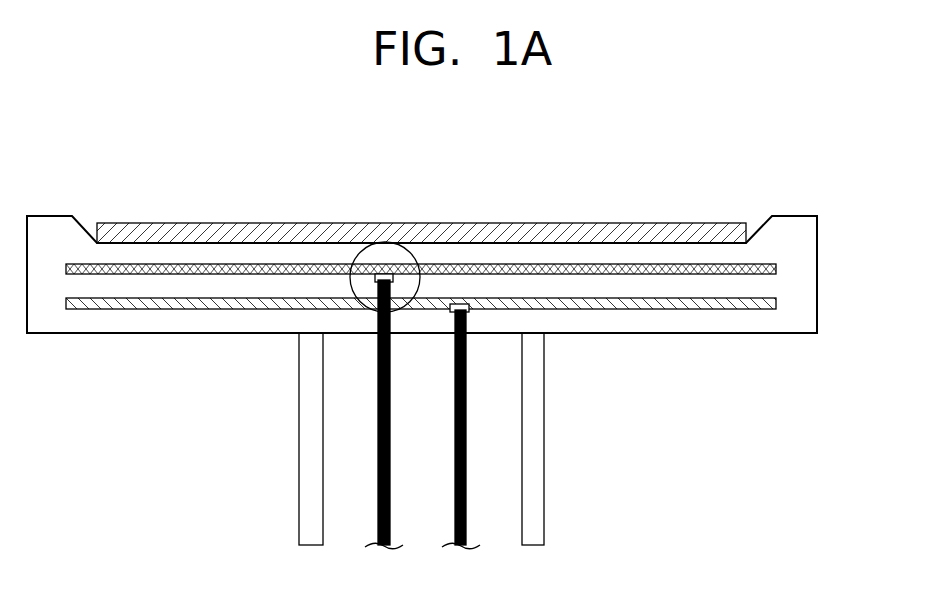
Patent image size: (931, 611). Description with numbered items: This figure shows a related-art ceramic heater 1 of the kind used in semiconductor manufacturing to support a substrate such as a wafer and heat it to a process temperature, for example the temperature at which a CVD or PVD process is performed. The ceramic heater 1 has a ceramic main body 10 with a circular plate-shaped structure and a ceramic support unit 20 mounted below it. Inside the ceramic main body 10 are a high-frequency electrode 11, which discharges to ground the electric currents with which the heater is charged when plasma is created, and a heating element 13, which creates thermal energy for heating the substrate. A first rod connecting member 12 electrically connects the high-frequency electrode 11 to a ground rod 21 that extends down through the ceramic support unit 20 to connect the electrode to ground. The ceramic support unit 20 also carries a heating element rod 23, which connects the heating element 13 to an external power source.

The ceramic heater 1 is at (44, 148).
The ceramic main body 10 is at (829, 196).
The high-frequency electrode 11 is at (776, 269).
The first rod connecting member 12 is at (389, 274).
The heating element 13 is at (776, 303).
The ceramic support unit 20 is at (564, 418).
The ground rod 21 is at (378, 493).
The heating element rod 23 is at (466, 493).